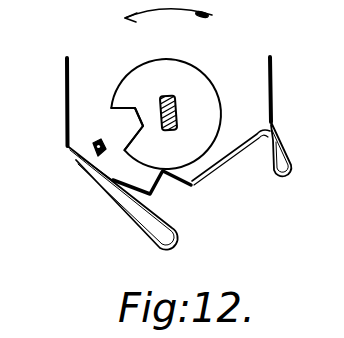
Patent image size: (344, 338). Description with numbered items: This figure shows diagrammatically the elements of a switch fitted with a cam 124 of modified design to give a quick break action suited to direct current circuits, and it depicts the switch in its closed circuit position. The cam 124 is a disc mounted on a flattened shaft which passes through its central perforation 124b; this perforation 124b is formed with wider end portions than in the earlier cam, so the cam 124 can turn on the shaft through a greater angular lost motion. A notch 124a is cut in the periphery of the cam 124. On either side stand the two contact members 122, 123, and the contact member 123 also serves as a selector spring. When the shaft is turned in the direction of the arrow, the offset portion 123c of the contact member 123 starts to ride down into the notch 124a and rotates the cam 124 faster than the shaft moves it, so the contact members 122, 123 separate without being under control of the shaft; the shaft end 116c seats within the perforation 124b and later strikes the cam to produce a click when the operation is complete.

The pin 116c is at (180, 117).
The contact member 122 is at (66, 118).
The contact member 123 is at (273, 94).
The latch end of spring arm 123c is at (177, 179).
The cam 124 is at (168, 72).
The notch 124a is at (114, 108).
The perforation 124b is at (178, 97).